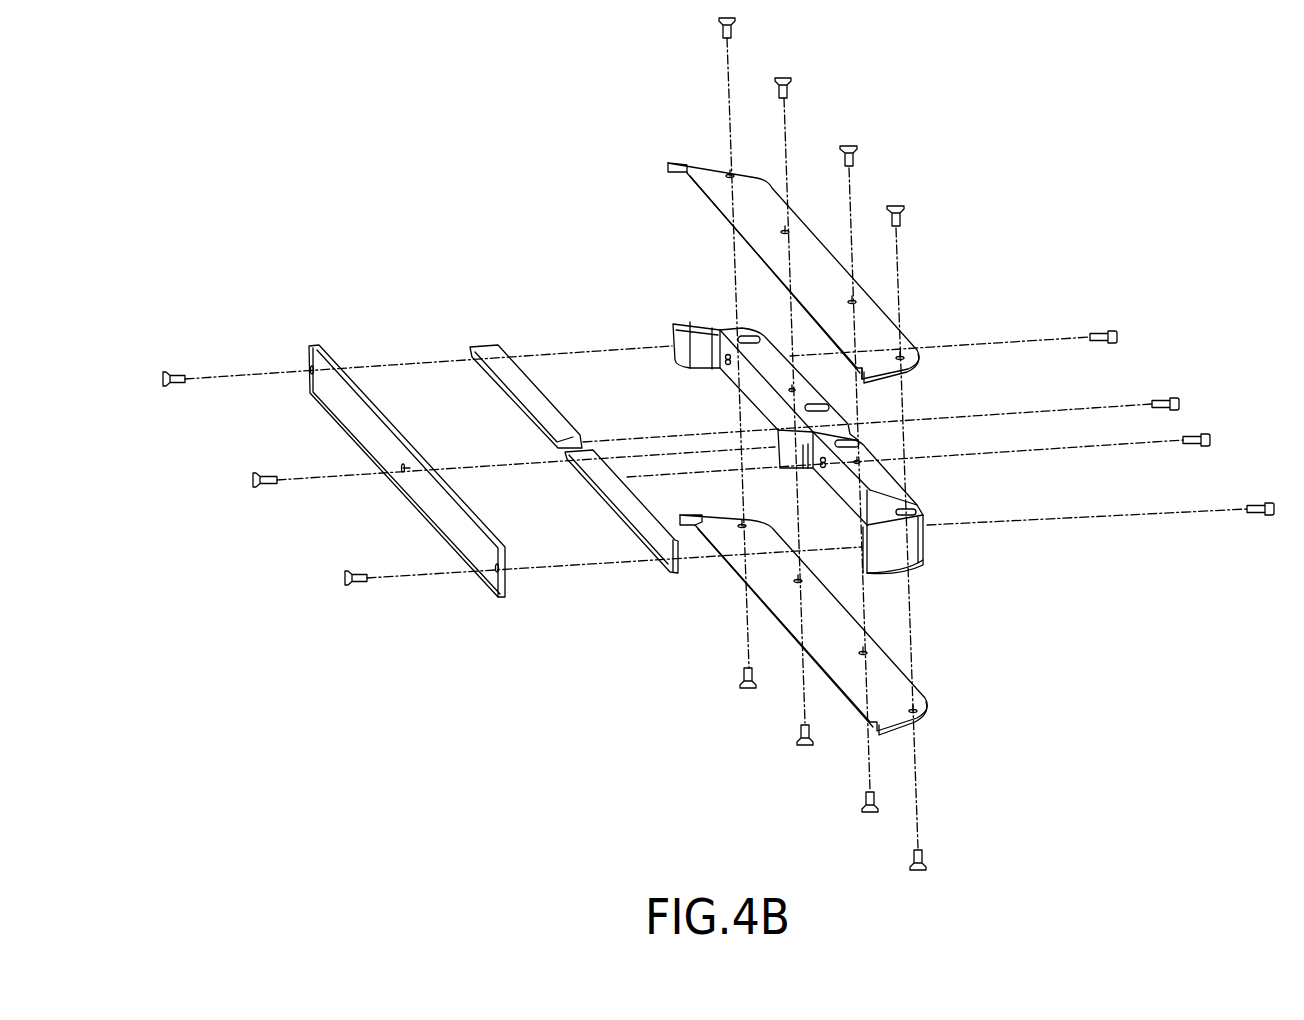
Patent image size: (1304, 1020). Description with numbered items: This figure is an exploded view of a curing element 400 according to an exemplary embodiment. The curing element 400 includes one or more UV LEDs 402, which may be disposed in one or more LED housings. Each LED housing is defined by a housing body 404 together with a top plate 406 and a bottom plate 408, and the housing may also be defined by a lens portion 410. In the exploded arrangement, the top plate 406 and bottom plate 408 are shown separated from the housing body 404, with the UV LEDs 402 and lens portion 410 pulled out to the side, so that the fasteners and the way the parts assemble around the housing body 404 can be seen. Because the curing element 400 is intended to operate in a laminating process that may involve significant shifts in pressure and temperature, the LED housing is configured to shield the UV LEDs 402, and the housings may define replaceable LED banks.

The curing element 400 is at (995, 191).
The UV LED 402 is at (492, 355).
The housing body 404 is at (918, 547).
The top plate 406 is at (705, 173).
The bottom plate 408 is at (918, 717).
The lens portion 410 is at (423, 493).